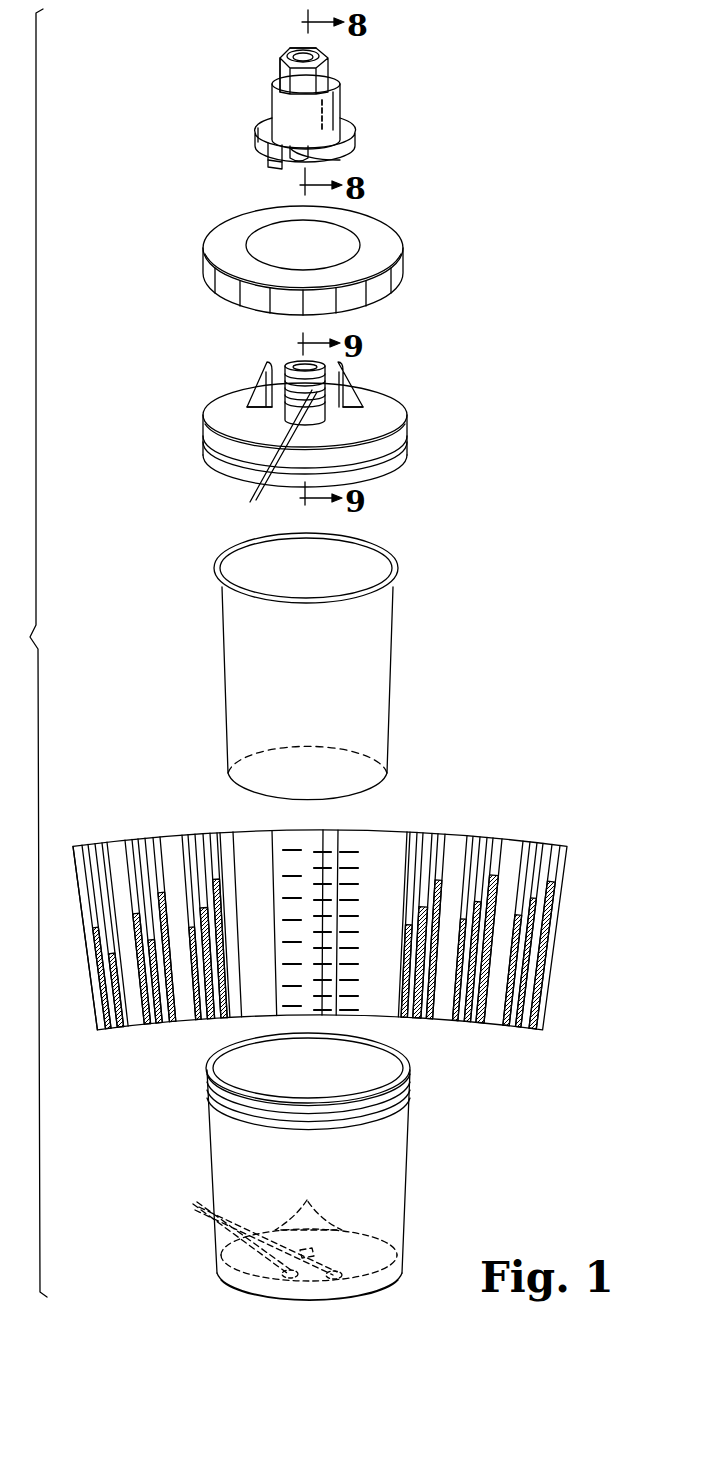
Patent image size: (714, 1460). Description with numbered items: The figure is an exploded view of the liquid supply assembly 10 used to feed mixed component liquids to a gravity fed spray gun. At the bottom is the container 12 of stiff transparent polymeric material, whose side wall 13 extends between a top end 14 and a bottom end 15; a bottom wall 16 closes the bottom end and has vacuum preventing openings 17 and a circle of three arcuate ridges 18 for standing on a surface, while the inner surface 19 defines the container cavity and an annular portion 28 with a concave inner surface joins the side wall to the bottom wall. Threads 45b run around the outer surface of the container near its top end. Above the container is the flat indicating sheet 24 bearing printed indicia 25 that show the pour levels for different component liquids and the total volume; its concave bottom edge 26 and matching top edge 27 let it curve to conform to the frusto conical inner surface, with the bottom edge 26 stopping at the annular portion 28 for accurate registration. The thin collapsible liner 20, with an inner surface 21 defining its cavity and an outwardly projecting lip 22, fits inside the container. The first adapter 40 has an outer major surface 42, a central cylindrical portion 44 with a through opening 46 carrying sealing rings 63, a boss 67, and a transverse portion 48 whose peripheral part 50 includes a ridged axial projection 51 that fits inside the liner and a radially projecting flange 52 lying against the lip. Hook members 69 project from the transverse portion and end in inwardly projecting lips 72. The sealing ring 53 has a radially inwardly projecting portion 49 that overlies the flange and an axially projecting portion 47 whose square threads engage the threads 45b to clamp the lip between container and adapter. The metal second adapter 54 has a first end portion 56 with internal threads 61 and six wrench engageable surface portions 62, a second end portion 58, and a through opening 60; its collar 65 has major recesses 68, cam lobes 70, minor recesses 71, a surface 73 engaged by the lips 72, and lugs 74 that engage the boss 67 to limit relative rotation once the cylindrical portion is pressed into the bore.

The liquid supply assembly 10 is at (24, 653).
The container 12 is at (319, 1168).
The side wall 13 is at (222, 1165).
The top end 14 is at (410, 1066).
The bottom end 15 is at (396, 1279).
The bottom wall 16 is at (230, 1284).
The vacuum preventing openings 17 is at (196, 1208).
The arcuate ridges 18 is at (307, 1200).
The inner surface 19 is at (308, 1071).
The liner 20 is at (336, 666).
The inner surface 21 is at (305, 570).
The lip 22 is at (396, 562).
The indicating sheet 24 is at (335, 933).
The indicia 25 is at (165, 860).
The bottom edge 26 is at (182, 1026).
The top edge 27 is at (263, 831).
The annular portion 28 is at (213, 1272).
The first adapter 40 is at (313, 421).
The outer major surface 42 is at (214, 422).
The cylindrical portion 44 is at (300, 384).
The threads 45b is at (411, 1093).
The through opening 46 is at (300, 362).
The axially projecting portion 47 is at (402, 278).
The transverse portion 48 is at (228, 400).
The radially inwardly projecting portion 49 is at (362, 225).
The peripheral part 50 is at (400, 410).
The axial projection 51 is at (390, 462).
The radially projecting flange 52 is at (409, 425).
The sealing ring 53 is at (329, 249).
The second adapter 54 is at (350, 98).
The first end portion 56 is at (330, 50).
The second end portion 58 is at (350, 138).
The through opening 60 is at (328, 55).
The internal threads 61 is at (300, 52).
The wrench engageable surface portions 62 is at (282, 70).
The sealing rings 63 is at (253, 502).
The collar 65 is at (332, 156).
The boss 67 is at (311, 418).
The major recesses 68 is at (262, 134).
The hook members 69 is at (265, 383).
The cam lobes 70 is at (268, 149).
The minor recesses 71 is at (300, 162).
The lips 72 is at (265, 362).
The surface 73 is at (320, 140).
The lugs 74 is at (270, 165).